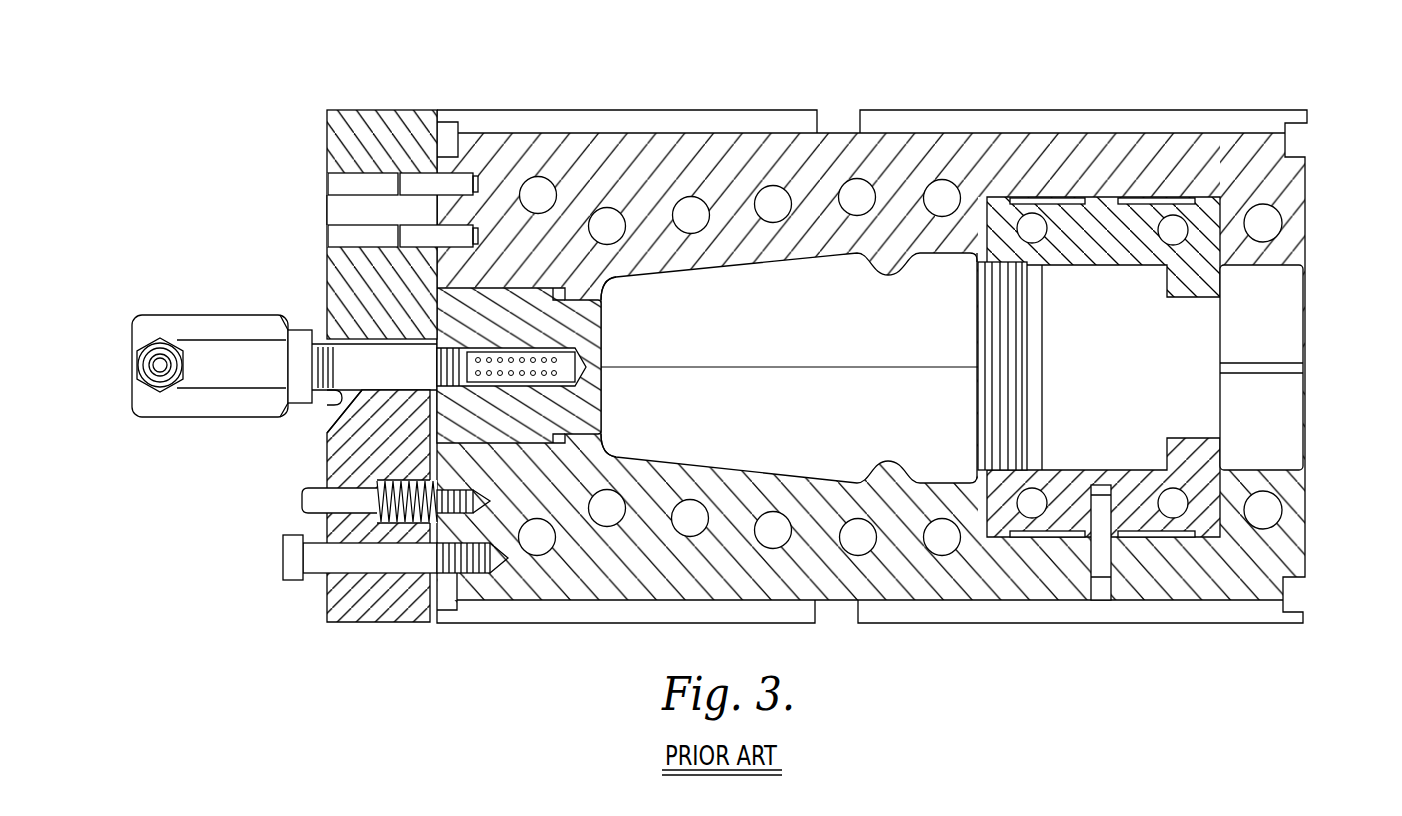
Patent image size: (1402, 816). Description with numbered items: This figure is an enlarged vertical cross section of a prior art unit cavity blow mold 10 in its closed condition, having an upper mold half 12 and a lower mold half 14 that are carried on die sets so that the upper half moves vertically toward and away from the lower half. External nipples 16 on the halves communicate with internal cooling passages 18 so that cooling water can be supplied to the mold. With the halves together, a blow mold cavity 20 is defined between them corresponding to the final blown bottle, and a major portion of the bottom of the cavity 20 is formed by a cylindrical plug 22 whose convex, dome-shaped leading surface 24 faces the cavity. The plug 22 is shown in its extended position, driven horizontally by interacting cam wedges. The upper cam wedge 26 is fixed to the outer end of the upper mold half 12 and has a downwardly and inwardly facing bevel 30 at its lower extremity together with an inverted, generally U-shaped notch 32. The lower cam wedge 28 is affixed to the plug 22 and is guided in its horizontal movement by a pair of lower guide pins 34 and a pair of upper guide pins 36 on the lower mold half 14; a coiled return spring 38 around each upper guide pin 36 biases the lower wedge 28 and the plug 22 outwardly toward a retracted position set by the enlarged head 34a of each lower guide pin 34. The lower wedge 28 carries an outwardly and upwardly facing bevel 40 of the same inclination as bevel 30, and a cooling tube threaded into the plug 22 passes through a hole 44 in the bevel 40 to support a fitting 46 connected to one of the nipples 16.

The unit cavity blow mold 10 is at (1265, 93).
The upper mold half 12 is at (1310, 203).
The lower mold half 14 is at (1312, 422).
The nipples 16 is at (160, 365).
The cooling passages 18 is at (692, 228).
The blow mold cavity 20 is at (910, 368).
The cylindrical plug 22 is at (600, 338).
The leading surface 24 is at (605, 393).
The upper cam wedge 26 is at (322, 131).
The lower cam wedge 28 is at (324, 618).
The bevel 30 is at (402, 337).
The notch 32 is at (330, 405).
The lower guide pins 34 is at (357, 567).
The enlarged head 34a is at (285, 575).
The upper guide pins 36 is at (305, 505).
The return spring 38 is at (305, 497).
The bevel 40 is at (333, 428).
The hole 44 is at (390, 390).
The fitting 46 is at (202, 326).